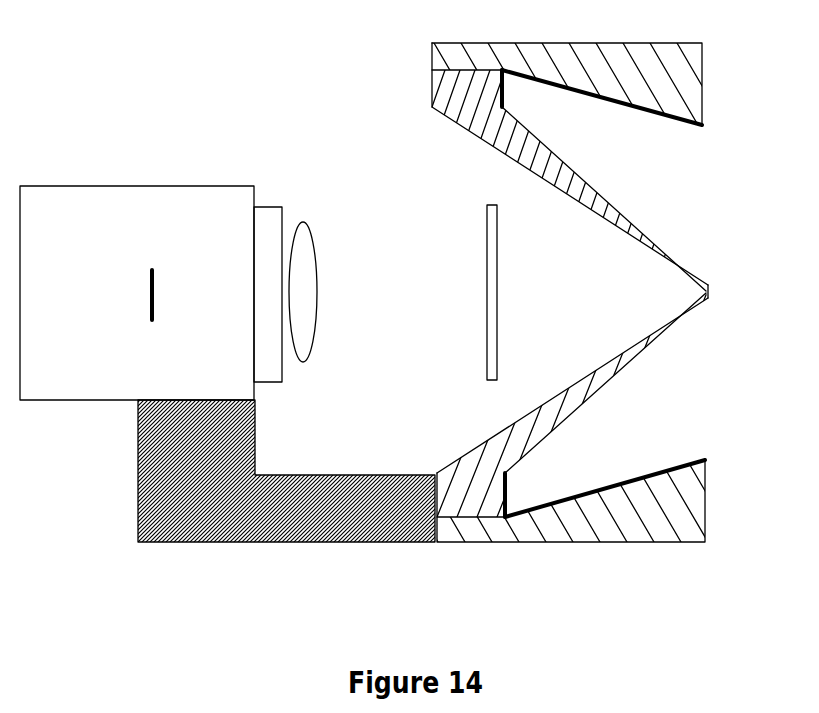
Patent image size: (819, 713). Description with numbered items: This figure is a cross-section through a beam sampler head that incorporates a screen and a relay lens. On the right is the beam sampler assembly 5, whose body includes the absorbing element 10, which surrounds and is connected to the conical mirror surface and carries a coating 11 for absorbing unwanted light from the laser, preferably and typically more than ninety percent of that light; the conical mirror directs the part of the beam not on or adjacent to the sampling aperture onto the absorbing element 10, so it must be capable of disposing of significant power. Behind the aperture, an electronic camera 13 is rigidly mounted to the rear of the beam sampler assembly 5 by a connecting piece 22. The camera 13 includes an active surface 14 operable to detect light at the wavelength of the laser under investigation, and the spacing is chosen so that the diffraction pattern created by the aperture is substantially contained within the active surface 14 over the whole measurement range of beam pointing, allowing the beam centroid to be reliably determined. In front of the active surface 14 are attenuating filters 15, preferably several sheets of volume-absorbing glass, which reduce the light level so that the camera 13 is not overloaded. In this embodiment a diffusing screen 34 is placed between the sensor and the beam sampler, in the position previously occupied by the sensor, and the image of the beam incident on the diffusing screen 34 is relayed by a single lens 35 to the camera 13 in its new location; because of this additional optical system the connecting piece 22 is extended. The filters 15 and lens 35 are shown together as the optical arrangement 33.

The beam sampler assembly 5 is at (482, 478).
The absorbing element 10 is at (685, 92).
The coating 11 is at (596, 100).
The electronic camera 13 is at (98, 187).
The active surface 14 is at (147, 292).
The attenuating filters 15 is at (265, 232).
The connecting piece 22 is at (137, 478).
The lens assembly 33 is at (271, 245).
The diffusing screen 34 is at (485, 247).
The single lens 35 is at (305, 222).